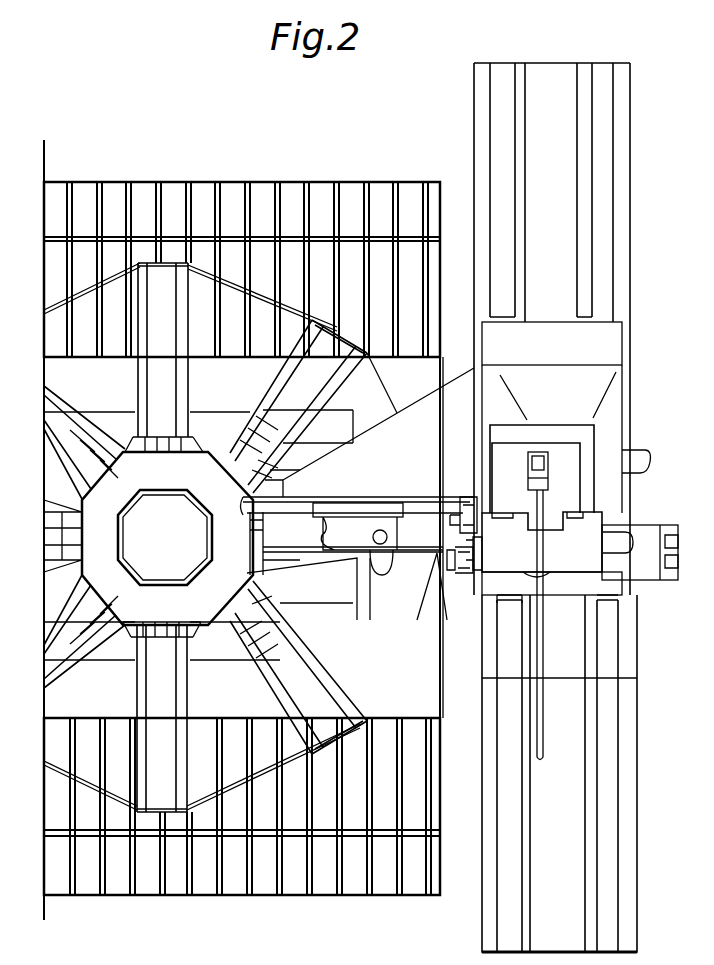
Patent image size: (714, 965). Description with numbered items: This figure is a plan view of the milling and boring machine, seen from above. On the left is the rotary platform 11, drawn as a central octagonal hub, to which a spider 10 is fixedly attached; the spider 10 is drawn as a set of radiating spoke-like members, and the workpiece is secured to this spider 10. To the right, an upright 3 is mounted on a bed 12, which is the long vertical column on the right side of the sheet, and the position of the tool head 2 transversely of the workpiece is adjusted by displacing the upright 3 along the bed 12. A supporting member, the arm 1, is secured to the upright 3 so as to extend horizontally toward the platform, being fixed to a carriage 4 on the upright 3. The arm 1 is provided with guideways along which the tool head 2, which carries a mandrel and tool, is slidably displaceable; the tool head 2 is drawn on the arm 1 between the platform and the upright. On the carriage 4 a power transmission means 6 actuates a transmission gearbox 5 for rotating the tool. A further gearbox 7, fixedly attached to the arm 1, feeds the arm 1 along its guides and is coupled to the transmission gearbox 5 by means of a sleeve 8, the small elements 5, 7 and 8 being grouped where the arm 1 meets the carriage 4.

The arm 1 is at (463, 388).
The tool head 2 is at (375, 520).
The upright 3 is at (605, 425).
The carriage 4 is at (645, 568).
The transmission gearbox 5 is at (463, 575).
The power transmission means 6 is at (588, 557).
The gearbox 7 is at (463, 497).
The sleeve 8 is at (474, 540).
The spider 10 is at (290, 386).
The rotary platform 11 is at (118, 432).
The bed 12 is at (608, 745).